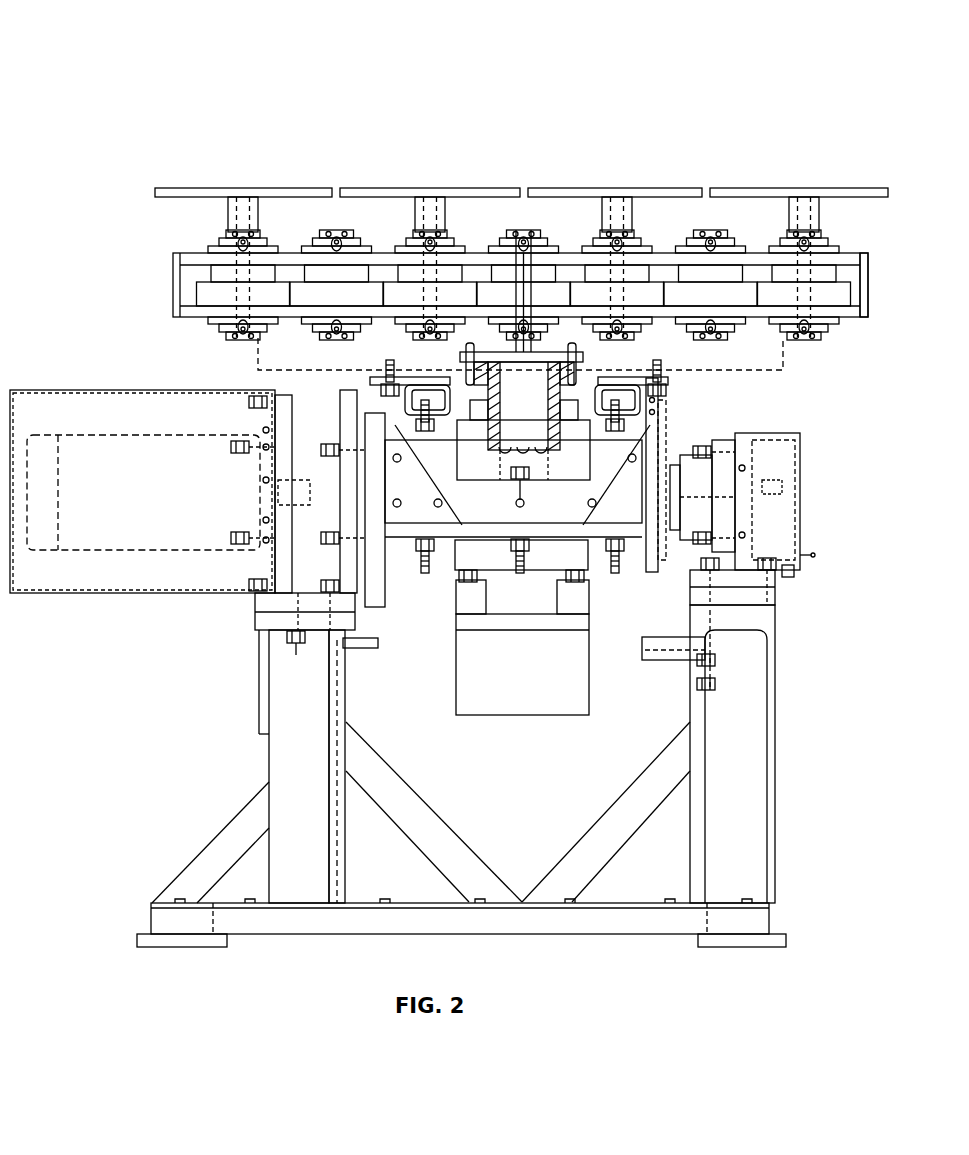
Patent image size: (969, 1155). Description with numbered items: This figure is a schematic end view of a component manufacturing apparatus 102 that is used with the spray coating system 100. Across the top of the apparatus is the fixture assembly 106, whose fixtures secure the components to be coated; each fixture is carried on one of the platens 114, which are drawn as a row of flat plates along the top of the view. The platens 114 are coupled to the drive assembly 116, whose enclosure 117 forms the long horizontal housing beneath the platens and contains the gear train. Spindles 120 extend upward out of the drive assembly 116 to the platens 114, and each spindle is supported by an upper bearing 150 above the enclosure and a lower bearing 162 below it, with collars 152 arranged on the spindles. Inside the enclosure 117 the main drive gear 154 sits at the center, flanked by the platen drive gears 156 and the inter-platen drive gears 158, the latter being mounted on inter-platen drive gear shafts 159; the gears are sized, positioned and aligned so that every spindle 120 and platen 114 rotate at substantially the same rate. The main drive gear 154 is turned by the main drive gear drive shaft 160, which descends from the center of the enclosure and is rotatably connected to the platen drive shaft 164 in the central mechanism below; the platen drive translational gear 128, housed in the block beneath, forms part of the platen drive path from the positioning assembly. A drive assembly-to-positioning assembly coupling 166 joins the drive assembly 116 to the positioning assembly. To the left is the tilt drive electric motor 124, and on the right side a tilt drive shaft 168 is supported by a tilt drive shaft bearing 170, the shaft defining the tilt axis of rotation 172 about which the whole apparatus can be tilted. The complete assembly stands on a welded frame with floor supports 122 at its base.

The coating system 100 is at (122, 42).
The component manufacturing apparatus 102 is at (187, 117).
The fixture assembly 106 is at (183, 187).
The platens 114 is at (835, 188).
The drive assembly 116 is at (170, 285).
The enclosure 117 is at (870, 293).
The spindles 120 is at (243, 205).
The floor supports 122 is at (780, 904).
The tilt drive electric motor 124 is at (170, 503).
The platen drive translational gear 128 is at (545, 683).
The upper bearings 150 is at (527, 233).
The collars 152 is at (548, 282).
The main drive gear 154 is at (483, 290).
The platen drive gears 156 is at (653, 290).
The inter-platen drive gears 158 is at (743, 290).
The inter-platen drive gear shafts 159 is at (347, 277).
The main drive gear drive shaft 160 is at (540, 293).
The lower bearings 162 is at (218, 322).
The platen drive shaft 164 is at (523, 457).
The drive assembly-to-positioning assembly coupling 166 is at (663, 390).
The tilt drive shaft 168 is at (723, 483).
The tilt drive shaft bearing 170 is at (748, 537).
The tilt axis of rotation 172 is at (702, 497).